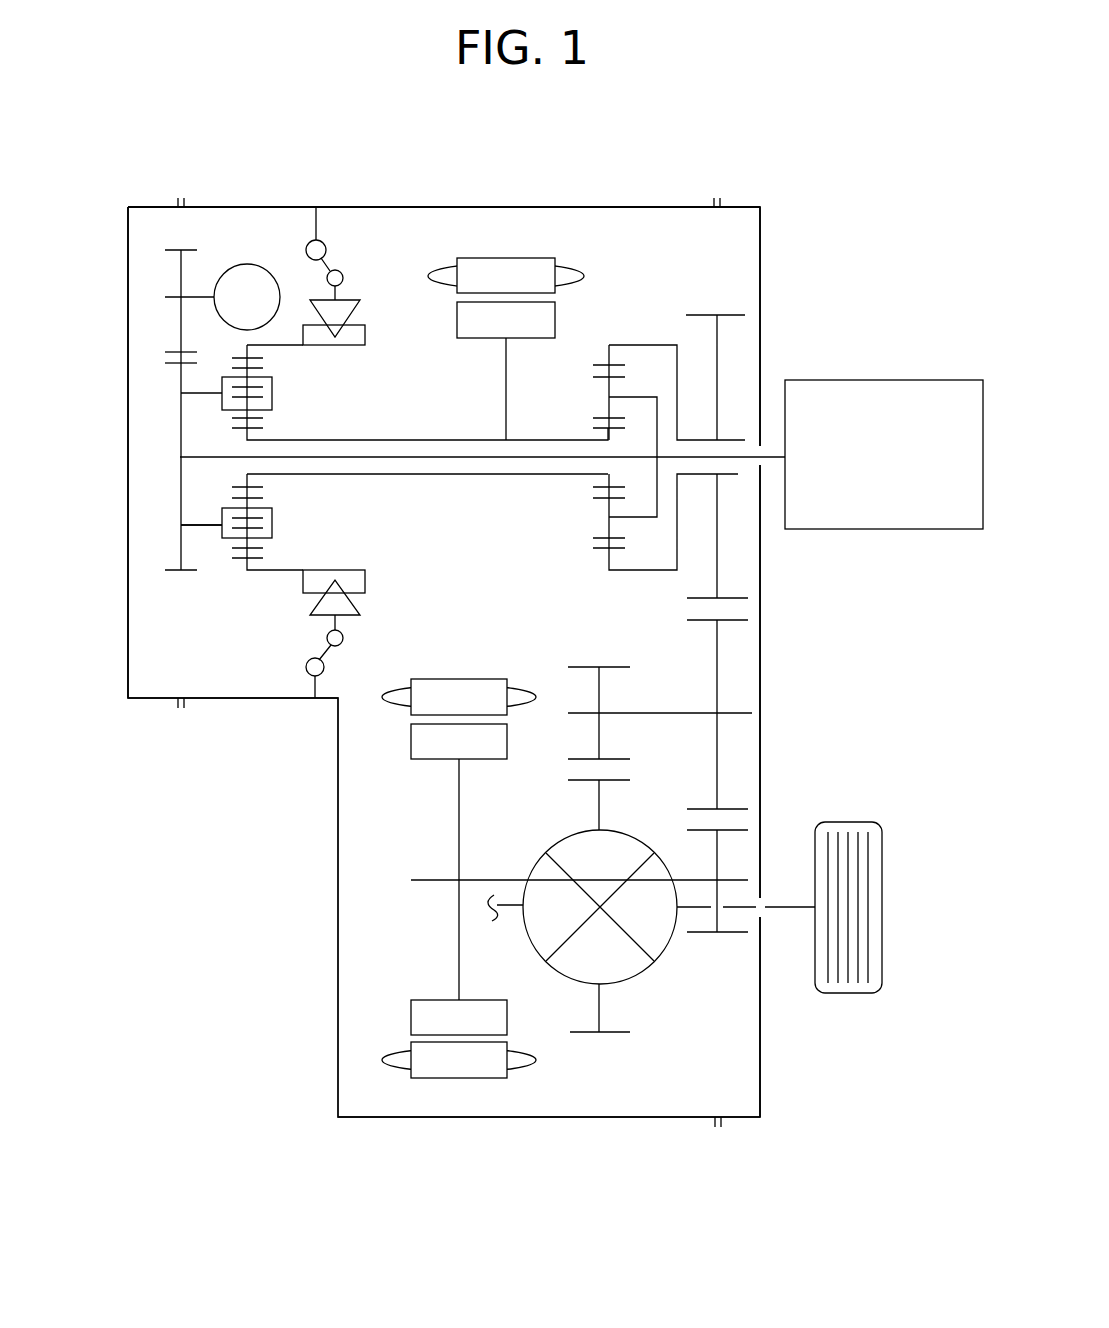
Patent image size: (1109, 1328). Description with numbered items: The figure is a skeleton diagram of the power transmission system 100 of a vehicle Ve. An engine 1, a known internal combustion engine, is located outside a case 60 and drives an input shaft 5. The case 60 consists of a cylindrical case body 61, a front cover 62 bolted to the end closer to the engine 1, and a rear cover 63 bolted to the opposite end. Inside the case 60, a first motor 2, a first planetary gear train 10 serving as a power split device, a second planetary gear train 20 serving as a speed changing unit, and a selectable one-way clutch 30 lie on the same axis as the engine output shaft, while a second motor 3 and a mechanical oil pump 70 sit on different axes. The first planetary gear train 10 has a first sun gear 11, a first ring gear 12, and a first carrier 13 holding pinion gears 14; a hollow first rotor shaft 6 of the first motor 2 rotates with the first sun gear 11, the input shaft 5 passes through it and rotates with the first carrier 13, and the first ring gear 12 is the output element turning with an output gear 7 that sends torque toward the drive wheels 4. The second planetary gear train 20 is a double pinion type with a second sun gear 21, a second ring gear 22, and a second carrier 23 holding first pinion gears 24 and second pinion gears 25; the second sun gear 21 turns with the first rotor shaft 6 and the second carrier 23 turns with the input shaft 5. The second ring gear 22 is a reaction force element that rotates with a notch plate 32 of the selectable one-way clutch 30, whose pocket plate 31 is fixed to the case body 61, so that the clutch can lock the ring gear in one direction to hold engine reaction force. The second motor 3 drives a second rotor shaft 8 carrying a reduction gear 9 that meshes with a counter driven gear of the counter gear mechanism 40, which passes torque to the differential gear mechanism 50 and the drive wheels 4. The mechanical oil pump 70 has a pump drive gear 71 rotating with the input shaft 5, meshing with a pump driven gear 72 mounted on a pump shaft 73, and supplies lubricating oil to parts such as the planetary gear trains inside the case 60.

The power transmission system 100 is at (840, 183).
The vehicle Ve is at (781, 133).
The engine 1 is at (932, 380).
The first motor 2 is at (507, 243).
The second motor 3 is at (394, 736).
The drive wheels 4 is at (862, 822).
The input shaft 5 is at (745, 455).
The first rotor shaft 6 is at (412, 440).
The output gear 7 is at (748, 598).
The second rotor shaft 8 is at (490, 878).
The reduction gear 9 is at (735, 835).
The first planetary gear train 10 is at (634, 320).
The first sun gear 11 is at (600, 427).
The first ring gear 12 is at (600, 365).
The first carrier 13 is at (640, 396).
The pinion gears 14 is at (600, 538).
The second planetary gear train 20 is at (235, 590).
The second sun gear 21 is at (258, 428).
The second ring gear 22 is at (258, 360).
The second carrier 23 is at (213, 527).
The first pinion gears 24 is at (258, 498).
The second pinion gears 25 is at (258, 548).
The selectable one-way clutch 30 is at (338, 245).
The pocket plate 31 is at (312, 225).
The notch plate 32 is at (365, 340).
The counter gear mechanism 40 is at (746, 688).
The differential gear mechanism 50 is at (598, 1047).
The case 60 is at (400, 203).
The case body 61 is at (580, 206).
The front cover 62 is at (760, 222).
The rear cover 63 is at (128, 220).
The mechanical oil pump 70 is at (247, 258).
The pump drive gear 71 is at (175, 365).
The pump driven gear 72 is at (172, 352).
The pump shaft 73 is at (205, 292).